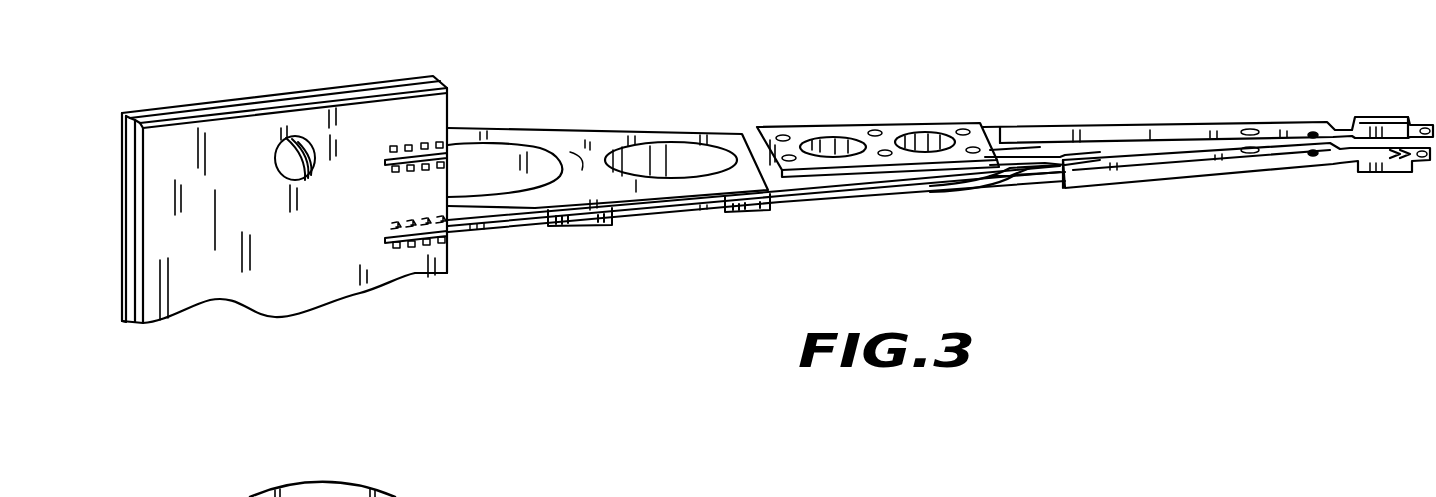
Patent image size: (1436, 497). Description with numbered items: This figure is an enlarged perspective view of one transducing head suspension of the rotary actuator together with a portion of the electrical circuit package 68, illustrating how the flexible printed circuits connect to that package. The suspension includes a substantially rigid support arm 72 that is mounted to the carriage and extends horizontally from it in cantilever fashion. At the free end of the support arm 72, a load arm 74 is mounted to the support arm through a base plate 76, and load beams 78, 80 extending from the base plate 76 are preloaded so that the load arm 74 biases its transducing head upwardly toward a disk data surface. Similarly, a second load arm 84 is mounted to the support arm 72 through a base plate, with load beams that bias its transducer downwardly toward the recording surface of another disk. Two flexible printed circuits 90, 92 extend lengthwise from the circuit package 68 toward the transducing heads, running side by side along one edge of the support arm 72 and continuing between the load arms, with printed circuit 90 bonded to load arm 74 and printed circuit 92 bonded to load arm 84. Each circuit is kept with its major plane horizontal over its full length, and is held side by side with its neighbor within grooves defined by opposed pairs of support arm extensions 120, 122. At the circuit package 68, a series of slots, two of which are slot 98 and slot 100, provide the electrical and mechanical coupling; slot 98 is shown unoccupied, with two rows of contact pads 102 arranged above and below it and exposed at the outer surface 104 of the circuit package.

The circuit package 68 is at (222, 132).
The support arm 72 is at (583, 147).
The load arm 74 is at (1163, 135).
The base plate 76 is at (860, 133).
The load beam 78 is at (1007, 130).
The load beam 80 is at (1030, 158).
The load arm 84 is at (1080, 172).
The flexible printed circuit 90 is at (518, 219).
The flexible printed circuit 92 is at (673, 210).
The slot 98 is at (390, 162).
The slot 100 is at (390, 238).
The contact pads 102 is at (412, 146).
The outer surface 104 is at (220, 287).
The support arm extension 120 is at (586, 229).
The support arm extension 122 is at (752, 213).